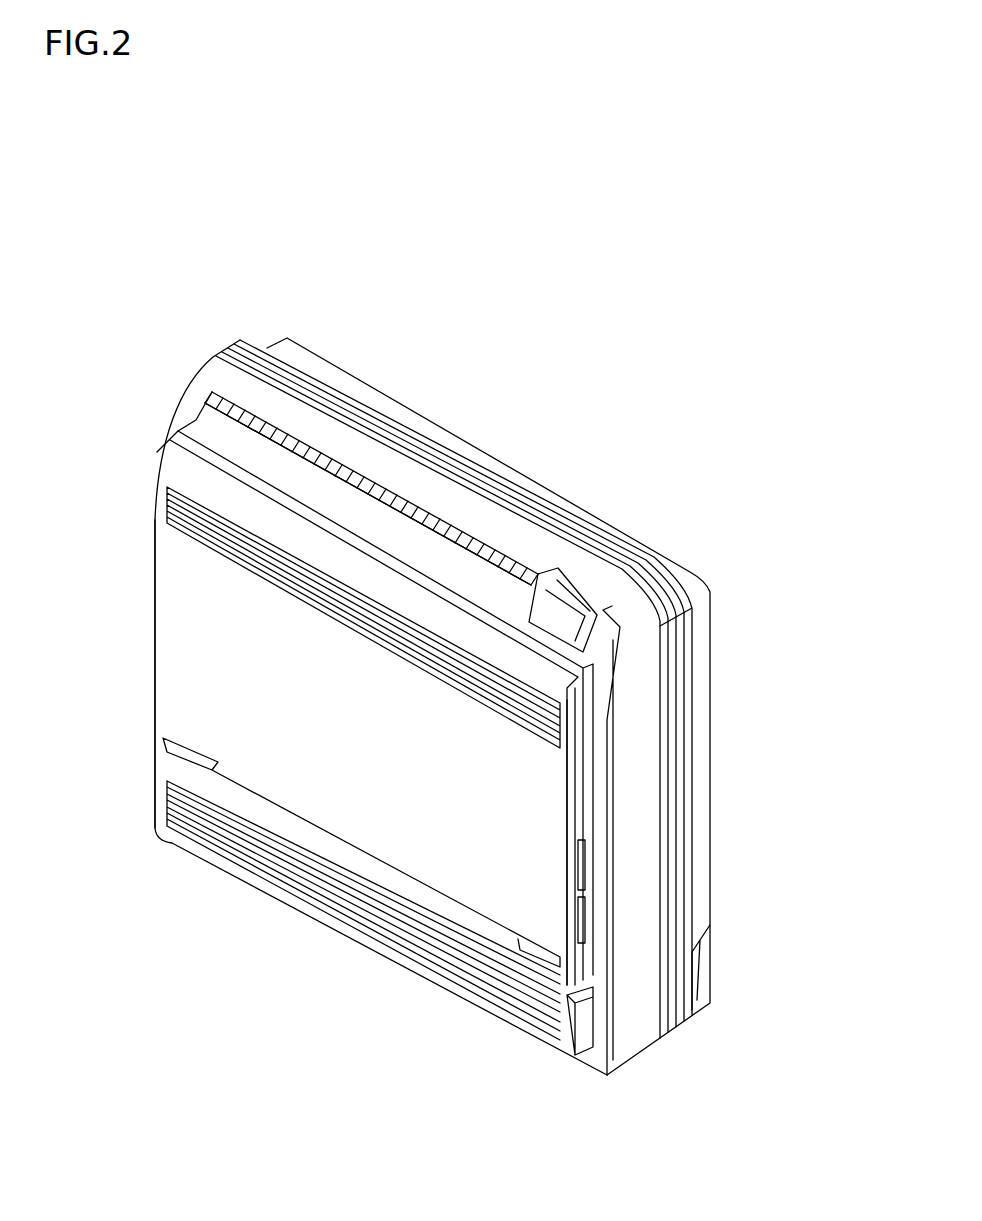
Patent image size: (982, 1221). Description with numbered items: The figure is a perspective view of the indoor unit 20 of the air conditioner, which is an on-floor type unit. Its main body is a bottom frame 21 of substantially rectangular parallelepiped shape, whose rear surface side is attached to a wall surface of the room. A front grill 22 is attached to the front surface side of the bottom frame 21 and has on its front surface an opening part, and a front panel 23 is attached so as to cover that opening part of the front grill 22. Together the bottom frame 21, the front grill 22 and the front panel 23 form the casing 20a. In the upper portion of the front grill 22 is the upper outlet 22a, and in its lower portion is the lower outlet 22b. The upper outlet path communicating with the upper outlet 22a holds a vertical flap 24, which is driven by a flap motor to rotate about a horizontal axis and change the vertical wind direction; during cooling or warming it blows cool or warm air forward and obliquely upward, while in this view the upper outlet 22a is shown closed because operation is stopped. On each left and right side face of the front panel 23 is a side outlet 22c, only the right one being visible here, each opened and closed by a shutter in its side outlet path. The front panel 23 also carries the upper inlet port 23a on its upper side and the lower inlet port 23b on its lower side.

The indoor unit 20 is at (434, 673).
The casing 20a is at (152, 681).
The bottom frame 21 is at (596, 515).
The front grill 22 is at (632, 742).
The upper outlet 22a is at (385, 515).
The lower outlet 22b is at (240, 835).
The side outlet 22c is at (583, 822).
The front panel 23 is at (227, 668).
The upper inlet port 23a is at (202, 530).
The lower inlet port 23b is at (338, 840).
The vertical flap 24 is at (310, 480).